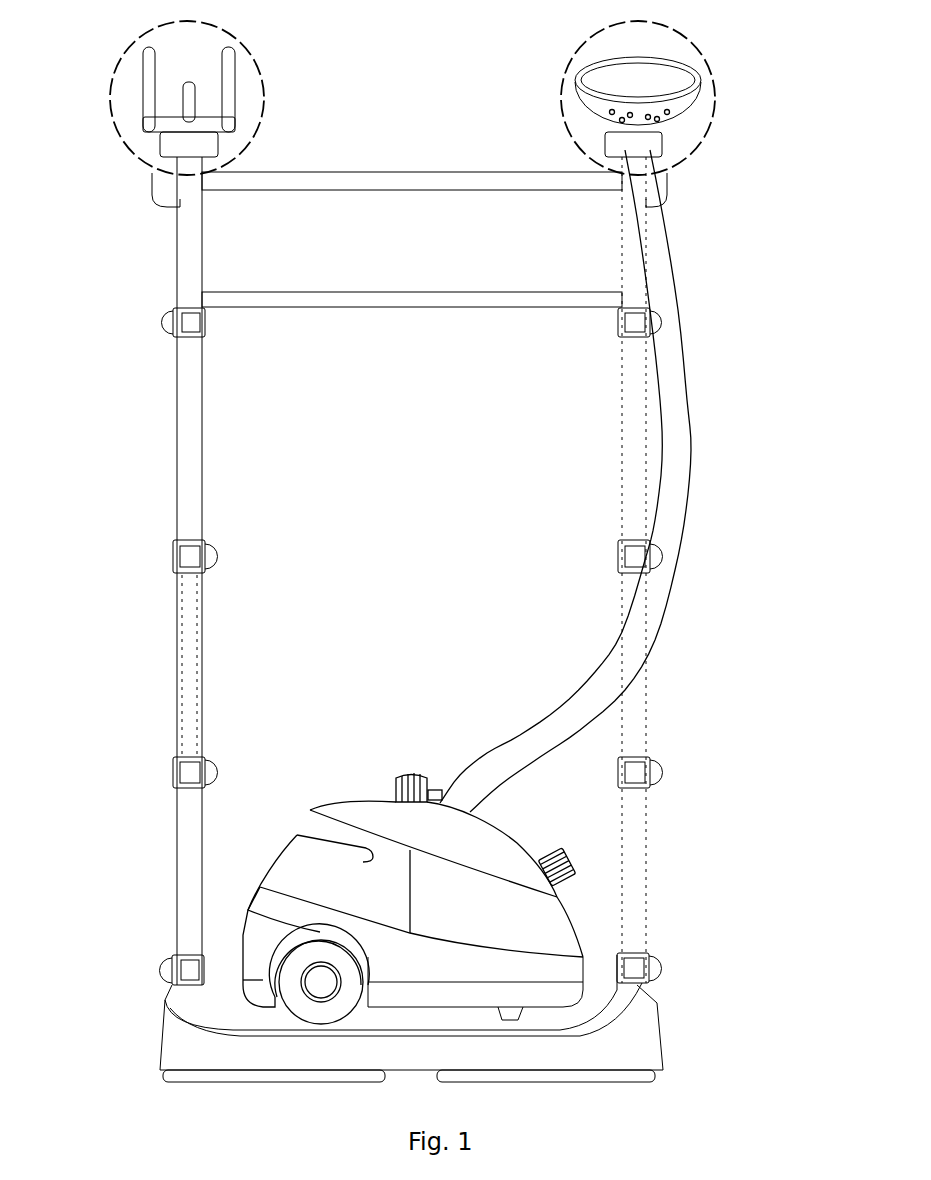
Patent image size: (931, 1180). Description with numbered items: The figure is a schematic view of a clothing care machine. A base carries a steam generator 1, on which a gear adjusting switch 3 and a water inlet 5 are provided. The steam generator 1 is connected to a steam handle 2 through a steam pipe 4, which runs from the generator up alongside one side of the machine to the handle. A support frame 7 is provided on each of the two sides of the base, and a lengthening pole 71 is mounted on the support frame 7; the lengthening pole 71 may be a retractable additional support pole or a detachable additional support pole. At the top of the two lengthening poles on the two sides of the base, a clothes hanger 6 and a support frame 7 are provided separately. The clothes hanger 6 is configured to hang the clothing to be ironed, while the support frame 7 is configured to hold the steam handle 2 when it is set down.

The steam generator 1 is at (578, 927).
The steam handle 2 is at (693, 152).
The gear adjusting switch 3 is at (575, 864).
The steam pipe 4 is at (691, 435).
The water inlet 5 is at (440, 796).
The clothes hanger 6 is at (135, 152).
The support frame 7 is at (190, 878).
The lengthening pole 71 is at (190, 681).